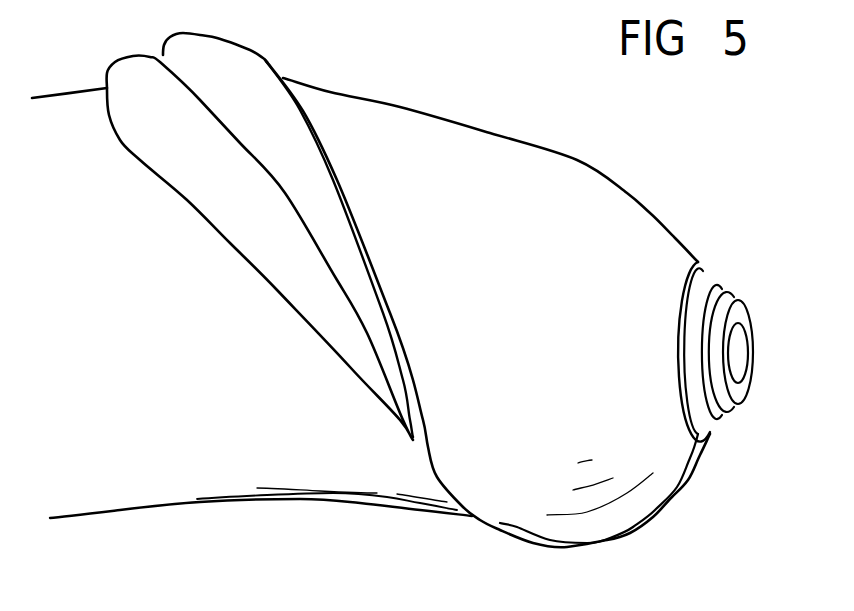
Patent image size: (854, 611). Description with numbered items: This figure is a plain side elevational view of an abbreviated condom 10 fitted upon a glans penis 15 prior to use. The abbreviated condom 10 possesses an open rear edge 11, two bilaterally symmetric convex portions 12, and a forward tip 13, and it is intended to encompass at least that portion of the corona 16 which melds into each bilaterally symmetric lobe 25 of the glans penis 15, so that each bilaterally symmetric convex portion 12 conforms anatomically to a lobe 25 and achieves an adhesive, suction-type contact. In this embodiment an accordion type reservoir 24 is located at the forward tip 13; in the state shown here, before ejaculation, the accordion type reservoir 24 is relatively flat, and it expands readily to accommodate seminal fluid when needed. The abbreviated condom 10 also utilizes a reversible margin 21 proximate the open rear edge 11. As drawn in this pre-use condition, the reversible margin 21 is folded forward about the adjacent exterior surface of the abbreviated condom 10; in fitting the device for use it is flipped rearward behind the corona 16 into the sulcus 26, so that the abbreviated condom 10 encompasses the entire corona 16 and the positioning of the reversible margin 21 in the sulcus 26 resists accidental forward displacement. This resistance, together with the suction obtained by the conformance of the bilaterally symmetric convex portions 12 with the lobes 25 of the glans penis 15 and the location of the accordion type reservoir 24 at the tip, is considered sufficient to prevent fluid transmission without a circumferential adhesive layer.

The abbreviated condom 10 is at (612, 208).
The open rear edge 11 is at (401, 363).
The bilaterally symmetric convex portion 12 is at (643, 523).
The forward tip 13 is at (738, 354).
The accordion type reservoir 24 is at (737, 313).
The glans penis 15 is at (220, 192).
The corona 16 is at (107, 72).
The reversible margin 21 is at (253, 77).
The bilaterally symmetric lobe 25 is at (493, 508).
The sulcus 26 is at (110, 128).